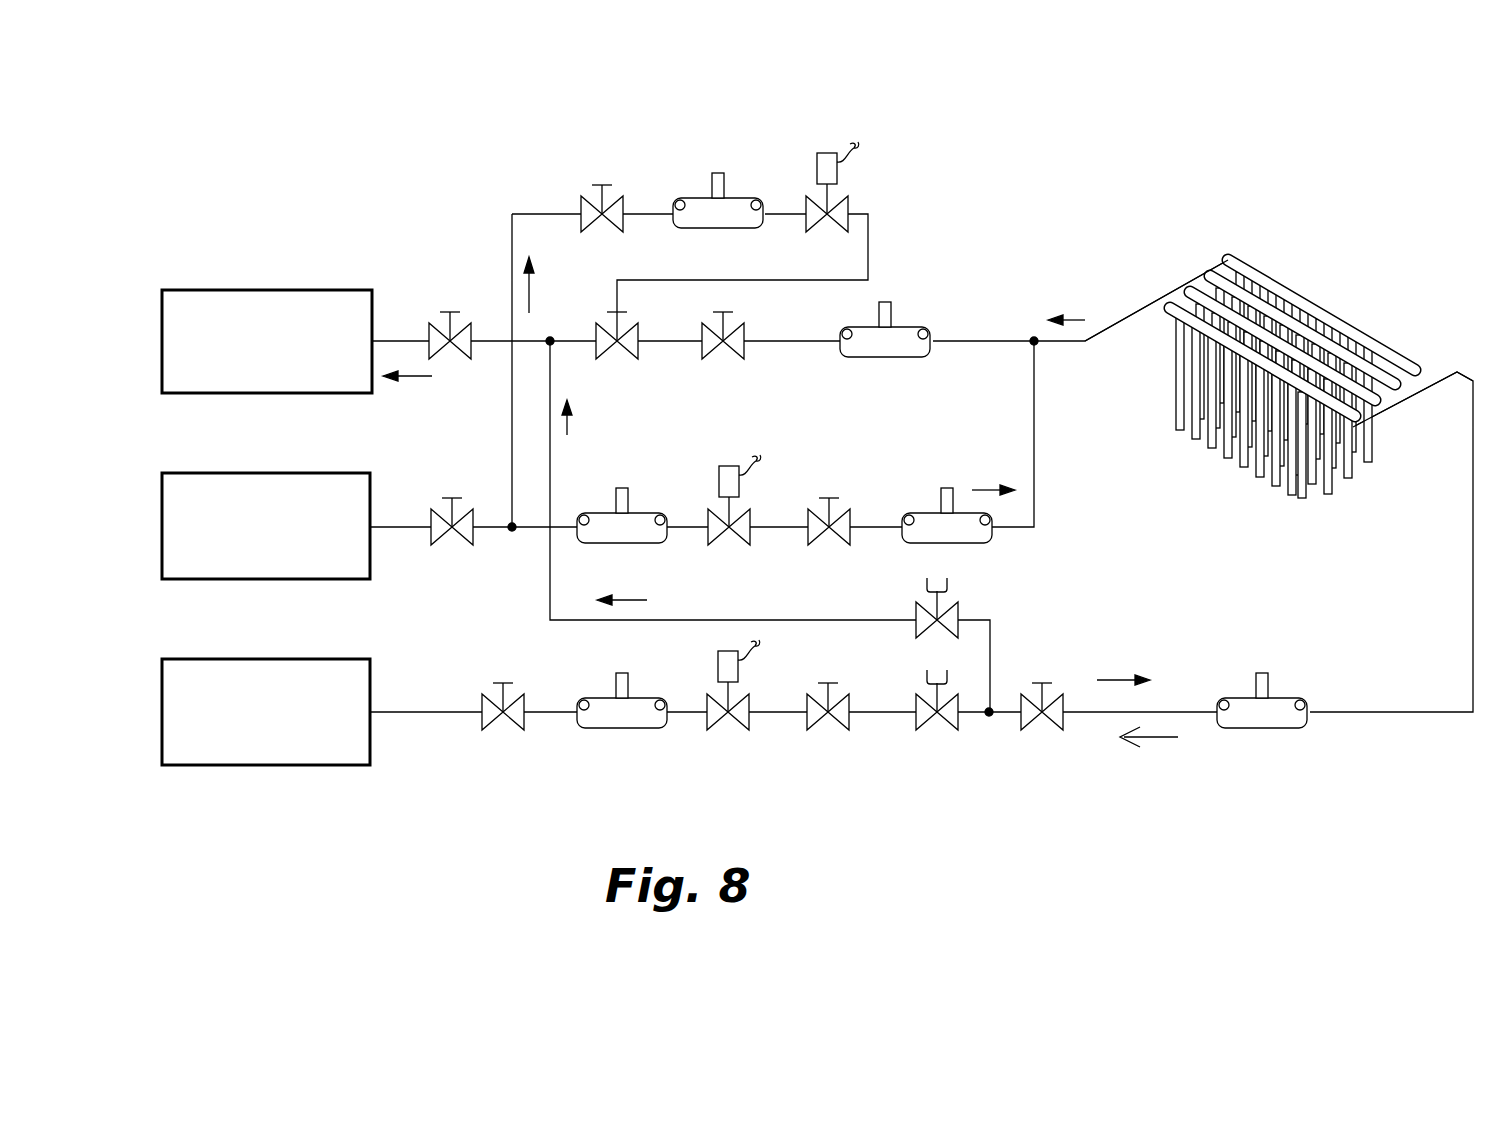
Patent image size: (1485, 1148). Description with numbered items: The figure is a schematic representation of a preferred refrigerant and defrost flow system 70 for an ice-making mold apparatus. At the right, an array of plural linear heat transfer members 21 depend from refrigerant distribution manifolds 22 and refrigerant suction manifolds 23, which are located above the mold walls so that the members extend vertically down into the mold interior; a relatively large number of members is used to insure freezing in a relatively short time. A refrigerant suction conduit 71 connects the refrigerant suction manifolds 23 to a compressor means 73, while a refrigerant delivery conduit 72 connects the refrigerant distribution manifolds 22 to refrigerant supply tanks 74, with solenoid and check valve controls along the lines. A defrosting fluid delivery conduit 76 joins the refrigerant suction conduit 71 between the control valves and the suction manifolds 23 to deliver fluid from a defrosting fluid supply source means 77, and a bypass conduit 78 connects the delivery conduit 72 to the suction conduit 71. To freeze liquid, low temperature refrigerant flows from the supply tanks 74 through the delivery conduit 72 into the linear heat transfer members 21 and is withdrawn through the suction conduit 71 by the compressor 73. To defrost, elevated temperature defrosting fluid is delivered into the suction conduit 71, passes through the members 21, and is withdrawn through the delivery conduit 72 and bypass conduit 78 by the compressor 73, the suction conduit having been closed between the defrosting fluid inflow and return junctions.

The refrigerant and defrost flow system 70 is at (817, 505).
The refrigerant suction conduit 71 is at (915, 328).
The refrigerant delivery conduit 72 is at (1282, 728).
The compressor means 73 is at (268, 393).
The refrigerant supply tanks 74 is at (332, 765).
The defrosting fluid delivery conduit 76 is at (975, 544).
The defrosting fluid supply source means 77 is at (250, 580).
The bypass conduit 78 is at (549, 585).
The linear heat transfer members 21 is at (1302, 497).
The refrigerant distribution manifolds 22 is at (1413, 368).
The refrigerant suction manifolds 23 is at (1195, 283).